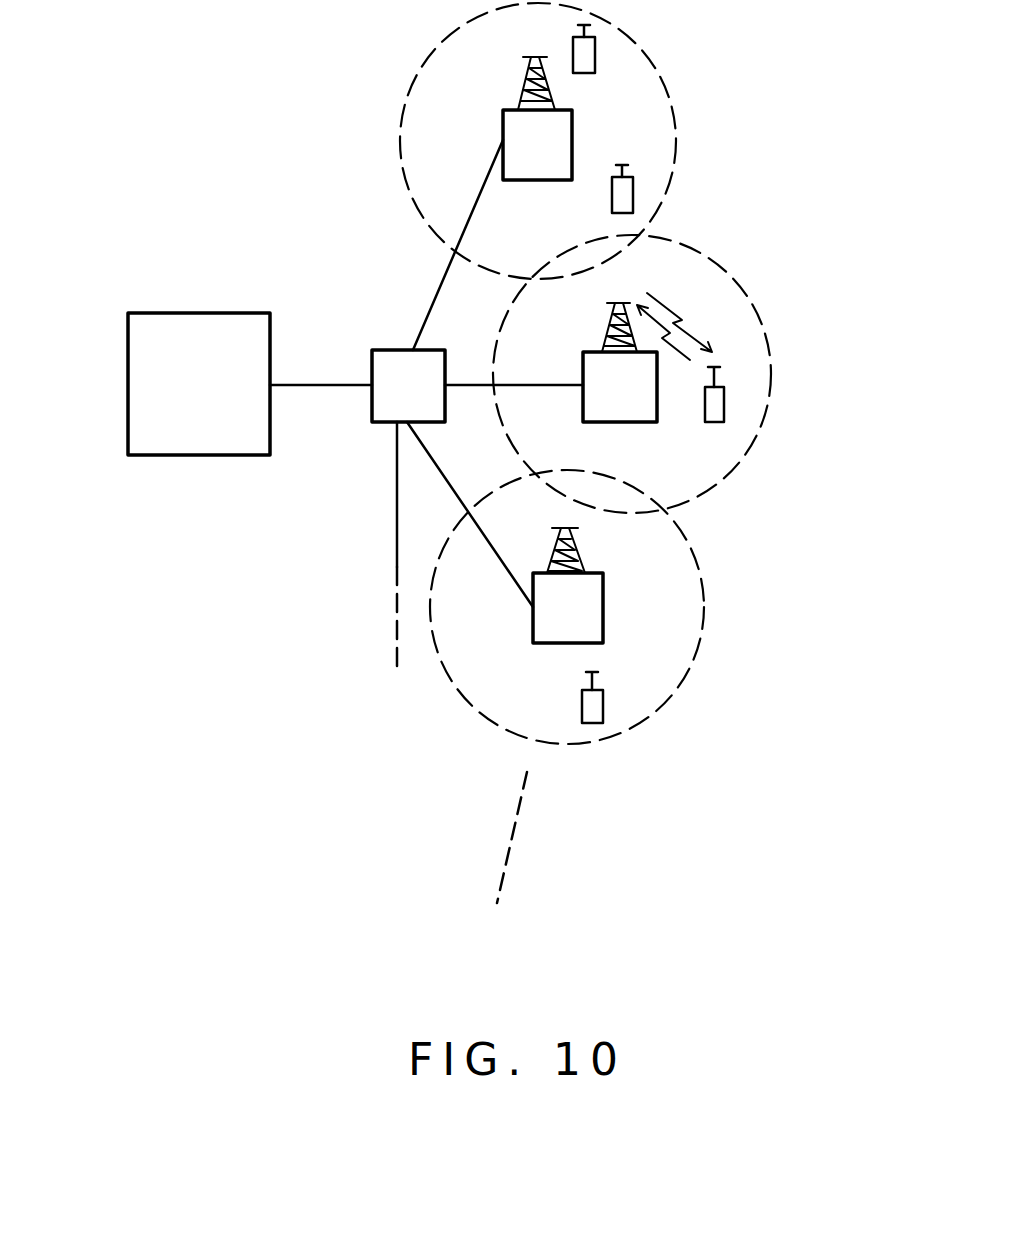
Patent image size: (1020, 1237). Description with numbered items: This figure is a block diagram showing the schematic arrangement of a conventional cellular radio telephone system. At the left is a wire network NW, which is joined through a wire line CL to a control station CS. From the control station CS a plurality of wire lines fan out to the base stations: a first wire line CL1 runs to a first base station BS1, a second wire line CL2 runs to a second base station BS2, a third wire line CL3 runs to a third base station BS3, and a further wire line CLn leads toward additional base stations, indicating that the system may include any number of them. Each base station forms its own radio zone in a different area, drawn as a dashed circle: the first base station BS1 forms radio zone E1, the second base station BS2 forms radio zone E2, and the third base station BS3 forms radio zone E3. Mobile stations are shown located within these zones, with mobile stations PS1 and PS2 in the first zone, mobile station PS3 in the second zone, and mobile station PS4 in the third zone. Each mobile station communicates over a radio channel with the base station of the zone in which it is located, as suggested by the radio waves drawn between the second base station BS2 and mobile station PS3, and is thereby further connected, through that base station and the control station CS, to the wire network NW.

The wire network NW is at (152, 313).
The wire line CL is at (324, 386).
The control station CS is at (398, 350).
The wire line CL1 is at (430, 298).
The wire line CL2 is at (522, 386).
The wire line CL3 is at (456, 488).
The wire line CLn is at (395, 500).
The base station BS1 is at (556, 180).
The base station BS2 is at (628, 422).
The base station BS3 is at (603, 612).
The mobile station PS1 is at (595, 62).
The mobile station PS2 is at (633, 194).
The mobile station PS3 is at (724, 404).
The mobile station PS4 is at (603, 712).
The radio zone E1 is at (634, 44).
The radio zone E2 is at (760, 322).
The radio zone E3 is at (697, 560).